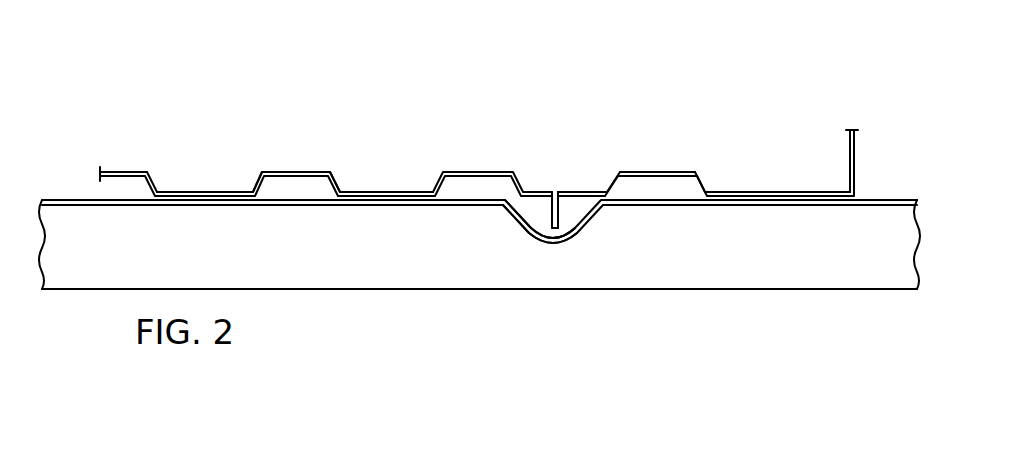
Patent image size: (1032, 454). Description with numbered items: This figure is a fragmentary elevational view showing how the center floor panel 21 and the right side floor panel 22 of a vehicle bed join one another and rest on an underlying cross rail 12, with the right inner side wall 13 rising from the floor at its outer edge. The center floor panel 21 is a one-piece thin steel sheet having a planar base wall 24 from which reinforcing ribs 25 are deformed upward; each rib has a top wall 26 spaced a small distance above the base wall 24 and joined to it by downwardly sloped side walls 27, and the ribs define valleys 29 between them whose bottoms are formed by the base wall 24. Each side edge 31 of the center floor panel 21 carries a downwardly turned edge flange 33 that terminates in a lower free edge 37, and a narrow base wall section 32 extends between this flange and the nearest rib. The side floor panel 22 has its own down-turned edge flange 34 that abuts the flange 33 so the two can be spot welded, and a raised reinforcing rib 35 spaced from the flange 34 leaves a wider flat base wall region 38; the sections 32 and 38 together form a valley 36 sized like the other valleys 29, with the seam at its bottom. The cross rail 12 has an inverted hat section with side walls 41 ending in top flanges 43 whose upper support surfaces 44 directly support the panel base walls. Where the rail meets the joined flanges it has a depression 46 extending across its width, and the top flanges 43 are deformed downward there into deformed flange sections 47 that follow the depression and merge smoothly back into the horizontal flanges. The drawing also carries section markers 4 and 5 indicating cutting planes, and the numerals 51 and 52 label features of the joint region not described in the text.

The cross rail 12 is at (690, 295).
The right inner side wall 13 is at (858, 146).
The center floor panel 21 is at (162, 170).
The right side floor panel 22 is at (767, 184).
The base wall 24 is at (387, 192).
The reinforcing ribs 25 is at (123, 172).
The top wall 26 is at (305, 172).
The side walls 27 is at (257, 180).
The valleys 29 is at (375, 192).
The side edge 31 is at (552, 193).
The base wall section 32 is at (532, 212).
The edge flange 33 is at (530, 233).
The edge flange 34 is at (582, 198).
The reinforcing rib 35 is at (660, 173).
The valley 36 is at (583, 190).
The lower free edge 37 is at (445, 180).
The flat base wall region 38 is at (596, 190).
The side walls 41 is at (783, 270).
The top flanges 43 is at (884, 205).
The upper support surfaces 44 is at (891, 198).
The depression 46 is at (568, 218).
The deformed flange sections 47 is at (558, 243).
The sealant 51 is at (473, 183).
The adhesive layer 52 is at (507, 195).
The section line 4- 4 is at (483, 163).
The section line 5- 5 is at (572, 190).